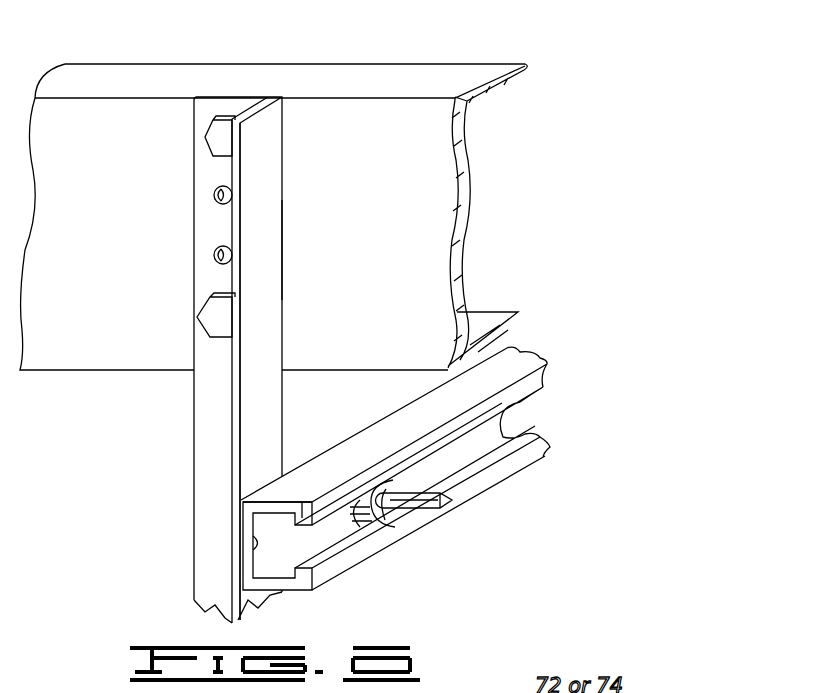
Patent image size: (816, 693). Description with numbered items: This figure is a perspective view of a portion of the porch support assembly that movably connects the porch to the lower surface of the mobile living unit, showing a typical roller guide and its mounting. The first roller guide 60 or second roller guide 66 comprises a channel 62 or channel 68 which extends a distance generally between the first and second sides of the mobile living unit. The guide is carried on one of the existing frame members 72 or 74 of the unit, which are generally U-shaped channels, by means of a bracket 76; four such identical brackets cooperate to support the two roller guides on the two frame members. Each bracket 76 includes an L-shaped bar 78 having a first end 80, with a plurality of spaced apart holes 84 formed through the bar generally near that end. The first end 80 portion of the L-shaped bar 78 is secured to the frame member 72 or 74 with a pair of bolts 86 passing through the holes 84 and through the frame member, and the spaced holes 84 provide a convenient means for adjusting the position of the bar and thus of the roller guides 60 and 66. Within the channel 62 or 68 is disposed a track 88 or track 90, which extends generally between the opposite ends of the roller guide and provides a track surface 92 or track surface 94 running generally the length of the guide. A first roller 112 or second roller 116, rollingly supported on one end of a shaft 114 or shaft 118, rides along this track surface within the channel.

The first roller guide 60 is at (455, 409).
The second roller guide 66 is at (505, 364).
The channel 62 is at (490, 477).
The channel 68 is at (508, 398).
The frame member 72 is at (273, 190).
The frame member 74 is at (358, 118).
The bracket 76 is at (274, 197).
The L-shaped bar 78 is at (270, 268).
The first end 80 is at (252, 112).
The holes 84 is at (215, 250).
The bolts 86 is at (222, 316).
The track 88 is at (164, 553).
The track 90 is at (258, 550).
The track surface 92 is at (356, 548).
The track surface 94 is at (284, 548).
The first roller 112 is at (517, 522).
The second roller 116 is at (387, 507).
The shaft 114 is at (548, 509).
The shaft 118 is at (453, 500).